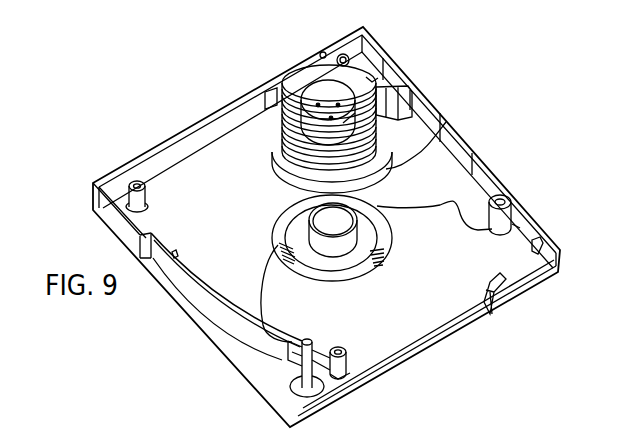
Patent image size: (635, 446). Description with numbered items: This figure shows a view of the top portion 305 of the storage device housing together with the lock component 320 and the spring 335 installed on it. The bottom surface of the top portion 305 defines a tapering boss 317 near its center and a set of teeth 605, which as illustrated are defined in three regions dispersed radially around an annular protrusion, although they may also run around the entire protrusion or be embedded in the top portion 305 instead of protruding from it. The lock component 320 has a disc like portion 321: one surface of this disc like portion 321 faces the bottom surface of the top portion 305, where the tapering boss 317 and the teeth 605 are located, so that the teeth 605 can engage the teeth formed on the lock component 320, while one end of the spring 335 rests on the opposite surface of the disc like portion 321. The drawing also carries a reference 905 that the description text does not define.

The top portion 305 is at (179, 113).
The lock component 320 is at (263, 174).
The spring retainer 905 is at (379, 121).
The spring 335 is at (412, 101).
The disc like portion 321 is at (409, 166).
The tapering boss 317 is at (258, 320).
The teeth 605 is at (513, 224).